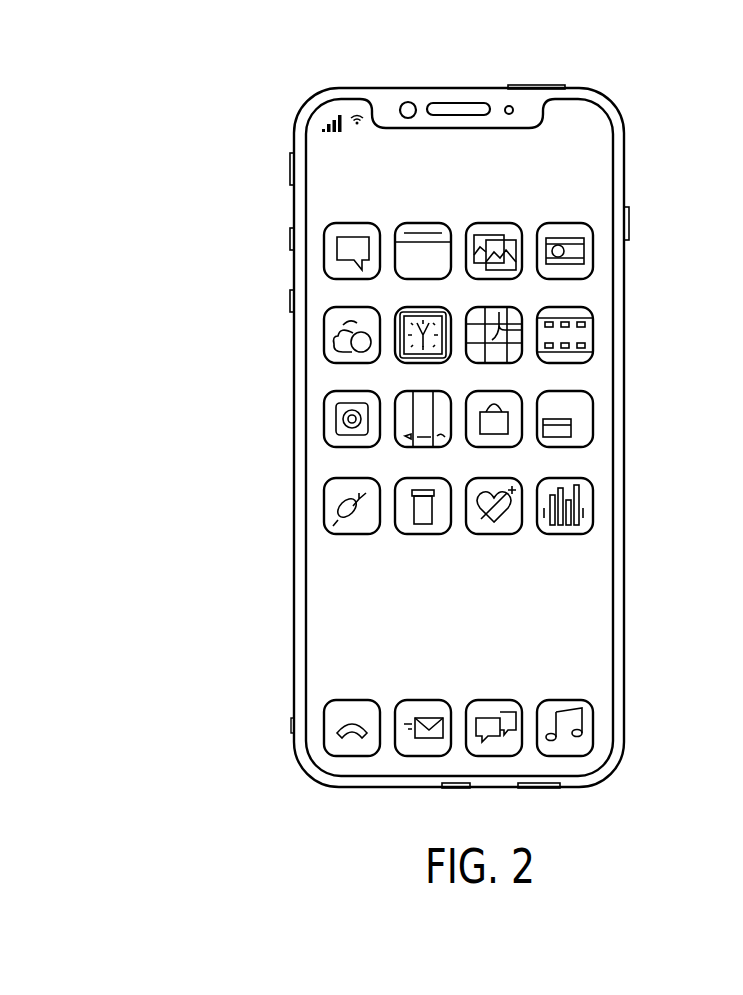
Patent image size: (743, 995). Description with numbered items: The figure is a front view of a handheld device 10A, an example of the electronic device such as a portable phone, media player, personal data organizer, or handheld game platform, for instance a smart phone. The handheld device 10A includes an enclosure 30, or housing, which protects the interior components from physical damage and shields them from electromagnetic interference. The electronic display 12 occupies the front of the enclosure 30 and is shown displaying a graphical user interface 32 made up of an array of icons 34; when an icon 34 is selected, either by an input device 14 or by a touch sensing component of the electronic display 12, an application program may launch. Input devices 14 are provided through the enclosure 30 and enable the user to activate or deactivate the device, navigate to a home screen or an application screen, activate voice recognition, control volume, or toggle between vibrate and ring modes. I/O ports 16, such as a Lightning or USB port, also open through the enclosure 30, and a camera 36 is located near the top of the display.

The handheld device 10A is at (284, 80).
The electronic display 12 is at (613, 567).
The input devices 14 is at (291, 300).
The I/O ports 16 is at (345, 787).
The enclosure 30 is at (625, 170).
The graphical user interface 32 is at (588, 382).
The icon 34 is at (493, 534).
The camera 36 is at (405, 103).